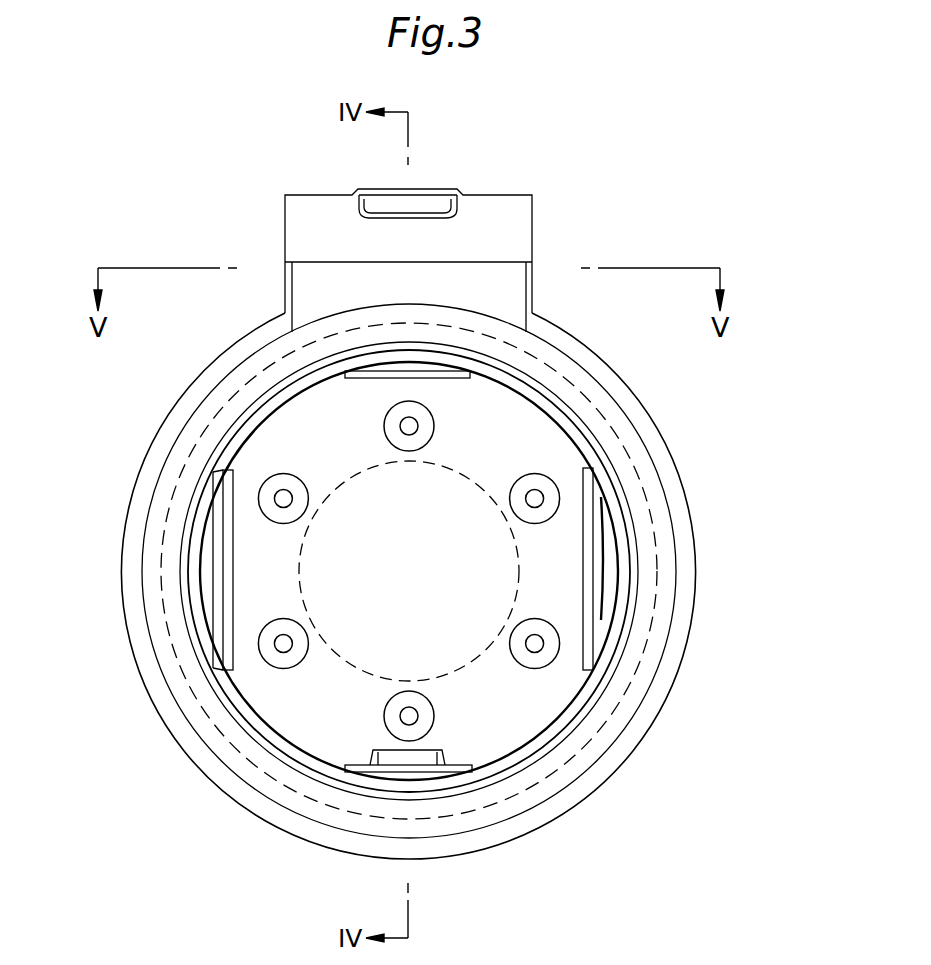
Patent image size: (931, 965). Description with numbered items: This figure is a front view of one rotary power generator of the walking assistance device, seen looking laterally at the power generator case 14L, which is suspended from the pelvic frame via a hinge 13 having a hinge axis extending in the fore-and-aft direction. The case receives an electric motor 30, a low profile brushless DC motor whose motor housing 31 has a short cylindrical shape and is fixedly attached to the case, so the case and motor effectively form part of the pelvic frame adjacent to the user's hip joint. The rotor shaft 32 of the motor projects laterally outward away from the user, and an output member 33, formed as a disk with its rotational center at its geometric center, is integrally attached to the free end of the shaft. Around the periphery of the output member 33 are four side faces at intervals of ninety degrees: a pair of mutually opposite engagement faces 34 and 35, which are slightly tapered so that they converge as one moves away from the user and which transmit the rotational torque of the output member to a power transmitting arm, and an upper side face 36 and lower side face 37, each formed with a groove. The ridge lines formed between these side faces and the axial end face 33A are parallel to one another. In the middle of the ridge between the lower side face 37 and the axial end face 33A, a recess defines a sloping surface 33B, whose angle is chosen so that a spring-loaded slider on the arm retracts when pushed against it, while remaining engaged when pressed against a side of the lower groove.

The hinge 13 is at (485, 197).
The power generator case 14L is at (686, 603).
The electric motor 30 is at (656, 513).
The motor housing 31 is at (617, 442).
The rotor shaft 32 is at (441, 464).
The output member 33 is at (538, 428).
The axial end face 33A is at (524, 712).
The sloping surface 33B is at (388, 765).
The side face 34 is at (219, 584).
The side face 35 is at (597, 623).
The upper side face 36 is at (433, 370).
The lower side face 37 is at (425, 772).